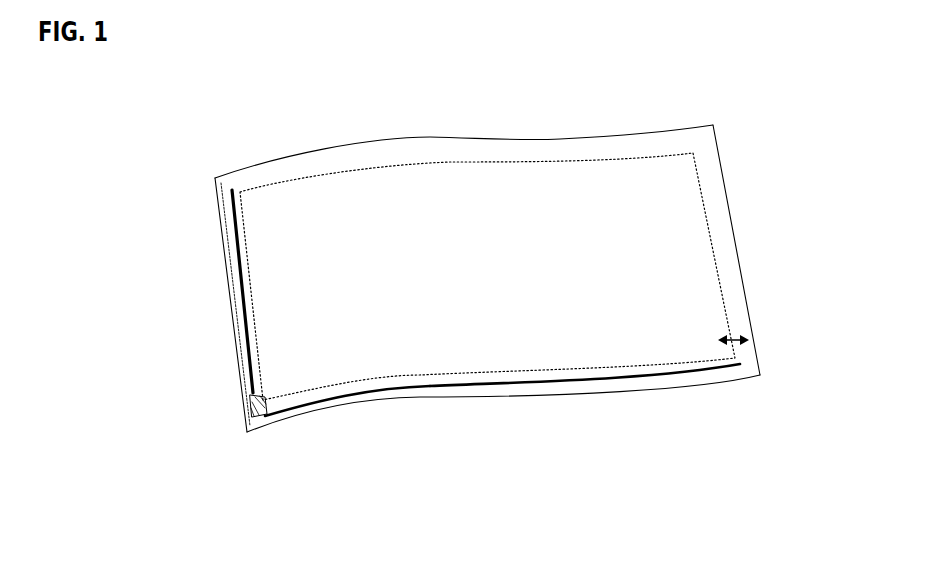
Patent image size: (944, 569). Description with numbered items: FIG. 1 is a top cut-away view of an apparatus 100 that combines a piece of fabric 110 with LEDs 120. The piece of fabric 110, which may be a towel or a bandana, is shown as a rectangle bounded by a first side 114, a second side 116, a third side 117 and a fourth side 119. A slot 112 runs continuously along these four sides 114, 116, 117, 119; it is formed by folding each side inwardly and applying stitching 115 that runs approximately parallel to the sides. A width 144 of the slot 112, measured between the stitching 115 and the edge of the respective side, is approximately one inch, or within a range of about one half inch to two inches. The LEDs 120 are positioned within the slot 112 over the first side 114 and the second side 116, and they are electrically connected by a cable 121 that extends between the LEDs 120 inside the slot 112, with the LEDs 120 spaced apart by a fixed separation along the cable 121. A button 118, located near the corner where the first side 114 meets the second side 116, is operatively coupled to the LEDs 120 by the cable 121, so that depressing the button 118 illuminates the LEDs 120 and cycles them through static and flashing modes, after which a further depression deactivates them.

The apparatus 100 is at (681, 80).
The piece of fabric 110 is at (732, 236).
The slot 112 is at (222, 280).
The first side 114 is at (215, 323).
The stitching 115 is at (293, 178).
The second side 116 is at (548, 397).
The third side 117 is at (760, 366).
The button 118 is at (237, 411).
The fourth side 119 is at (420, 137).
The LEDs 120 is at (218, 192).
The cable 121 is at (593, 385).
The width 144 is at (733, 334).